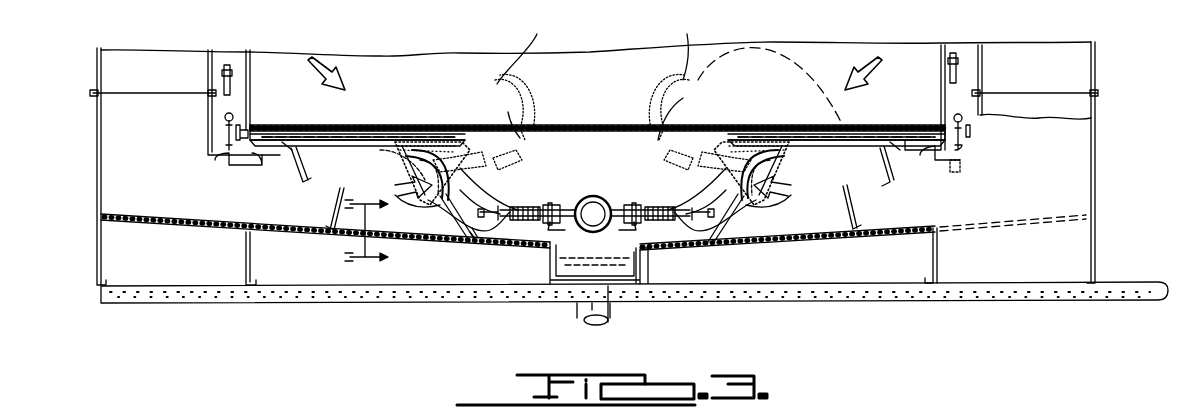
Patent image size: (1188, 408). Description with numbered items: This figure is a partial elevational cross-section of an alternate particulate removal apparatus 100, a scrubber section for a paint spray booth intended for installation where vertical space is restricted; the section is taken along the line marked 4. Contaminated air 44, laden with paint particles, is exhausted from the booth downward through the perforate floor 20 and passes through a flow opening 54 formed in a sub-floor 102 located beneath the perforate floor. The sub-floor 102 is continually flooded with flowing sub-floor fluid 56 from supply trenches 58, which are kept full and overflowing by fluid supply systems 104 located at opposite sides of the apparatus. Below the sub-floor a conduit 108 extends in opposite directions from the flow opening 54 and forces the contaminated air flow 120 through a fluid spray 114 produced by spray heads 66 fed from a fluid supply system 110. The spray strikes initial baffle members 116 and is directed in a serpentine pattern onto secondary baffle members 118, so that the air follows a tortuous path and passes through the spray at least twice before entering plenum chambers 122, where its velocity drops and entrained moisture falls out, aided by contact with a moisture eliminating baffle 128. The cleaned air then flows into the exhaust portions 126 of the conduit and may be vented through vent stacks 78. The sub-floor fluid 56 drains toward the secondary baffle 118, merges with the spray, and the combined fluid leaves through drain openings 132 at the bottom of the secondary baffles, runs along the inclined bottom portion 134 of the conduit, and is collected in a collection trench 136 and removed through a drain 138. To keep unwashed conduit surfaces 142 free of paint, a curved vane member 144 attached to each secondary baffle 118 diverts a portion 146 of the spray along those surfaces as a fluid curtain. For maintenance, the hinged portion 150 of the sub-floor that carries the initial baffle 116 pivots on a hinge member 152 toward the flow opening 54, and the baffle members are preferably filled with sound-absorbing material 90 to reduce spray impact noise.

The section line 4- 4 is at (346, 233).
The perforate floor 20 is at (540, 124).
The contaminated air 44 is at (592, 47).
The flow opening 54 is at (603, 150).
The sub-floor fluid 56 is at (330, 125).
The supply trenches 58 is at (268, 136).
The spray heads 66 is at (516, 208).
The vent stacks 78 is at (123, 62).
The sound-absorbing material 90 is at (406, 163).
The particulate removal apparatus 100 is at (574, 99).
The sub-floor 102 is at (355, 135).
The fluid supply systems 104 is at (212, 180).
The conduit 108 is at (357, 175).
The fluid supply system 110 is at (606, 196).
The fluid spray 114 is at (496, 172).
The initial baffle members 116 is at (465, 150).
The secondary baffle members 118 is at (430, 166).
The contaminated air flow 120 is at (522, 158).
The plenum chambers 122 is at (593, 244).
The exhaust portions 126 is at (200, 210).
The moisture eliminating baffle 128 is at (306, 175).
The drain openings 132 is at (775, 262).
The inclined bottom portion 134 is at (545, 288).
The collection trench 136 is at (572, 292).
The drain 138 is at (610, 315).
The unwashed conduit surfaces 142 is at (462, 235).
The curved vane member 144 is at (470, 200).
The diverted portion 146 is at (592, 264).
The hinged portion 150 is at (668, 106).
The hinge member 152 is at (430, 150).